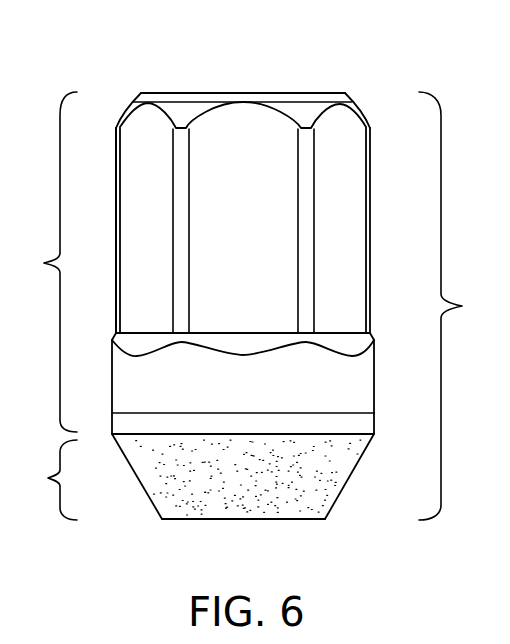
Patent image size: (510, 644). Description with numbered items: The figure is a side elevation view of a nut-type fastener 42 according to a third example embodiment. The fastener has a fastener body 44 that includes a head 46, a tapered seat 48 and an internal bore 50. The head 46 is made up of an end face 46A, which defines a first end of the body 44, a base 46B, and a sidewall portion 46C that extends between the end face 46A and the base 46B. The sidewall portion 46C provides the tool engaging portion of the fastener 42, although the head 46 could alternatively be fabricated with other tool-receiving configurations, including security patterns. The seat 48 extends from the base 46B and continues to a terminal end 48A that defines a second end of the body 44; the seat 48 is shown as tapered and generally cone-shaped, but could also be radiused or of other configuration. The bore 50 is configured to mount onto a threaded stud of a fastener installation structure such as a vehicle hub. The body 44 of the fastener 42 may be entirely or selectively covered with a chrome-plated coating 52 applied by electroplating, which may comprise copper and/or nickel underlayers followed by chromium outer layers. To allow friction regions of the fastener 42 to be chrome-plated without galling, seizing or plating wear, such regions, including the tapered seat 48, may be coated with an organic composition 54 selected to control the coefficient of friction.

The nut-type fastener 42 is at (124, 68).
The fastener body 44 is at (454, 306).
The head 46 is at (46, 262).
The end face 46A is at (300, 93).
The base 46B is at (360, 389).
The sidewall portion 46C is at (345, 184).
The tapered seat 48 is at (48, 480).
The terminal end 48A is at (290, 521).
The internal bore 50 is at (215, 521).
The chrome-plated coating 52 is at (116, 145).
The organic composition 54 is at (140, 484).